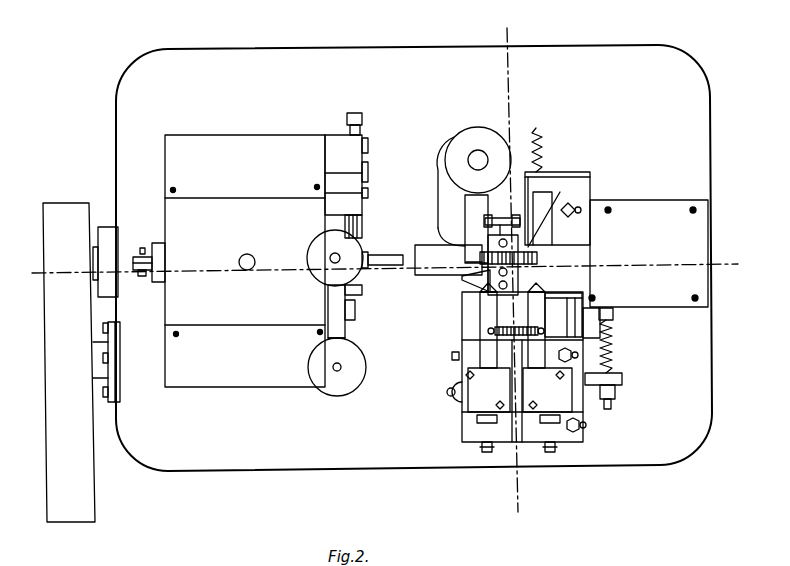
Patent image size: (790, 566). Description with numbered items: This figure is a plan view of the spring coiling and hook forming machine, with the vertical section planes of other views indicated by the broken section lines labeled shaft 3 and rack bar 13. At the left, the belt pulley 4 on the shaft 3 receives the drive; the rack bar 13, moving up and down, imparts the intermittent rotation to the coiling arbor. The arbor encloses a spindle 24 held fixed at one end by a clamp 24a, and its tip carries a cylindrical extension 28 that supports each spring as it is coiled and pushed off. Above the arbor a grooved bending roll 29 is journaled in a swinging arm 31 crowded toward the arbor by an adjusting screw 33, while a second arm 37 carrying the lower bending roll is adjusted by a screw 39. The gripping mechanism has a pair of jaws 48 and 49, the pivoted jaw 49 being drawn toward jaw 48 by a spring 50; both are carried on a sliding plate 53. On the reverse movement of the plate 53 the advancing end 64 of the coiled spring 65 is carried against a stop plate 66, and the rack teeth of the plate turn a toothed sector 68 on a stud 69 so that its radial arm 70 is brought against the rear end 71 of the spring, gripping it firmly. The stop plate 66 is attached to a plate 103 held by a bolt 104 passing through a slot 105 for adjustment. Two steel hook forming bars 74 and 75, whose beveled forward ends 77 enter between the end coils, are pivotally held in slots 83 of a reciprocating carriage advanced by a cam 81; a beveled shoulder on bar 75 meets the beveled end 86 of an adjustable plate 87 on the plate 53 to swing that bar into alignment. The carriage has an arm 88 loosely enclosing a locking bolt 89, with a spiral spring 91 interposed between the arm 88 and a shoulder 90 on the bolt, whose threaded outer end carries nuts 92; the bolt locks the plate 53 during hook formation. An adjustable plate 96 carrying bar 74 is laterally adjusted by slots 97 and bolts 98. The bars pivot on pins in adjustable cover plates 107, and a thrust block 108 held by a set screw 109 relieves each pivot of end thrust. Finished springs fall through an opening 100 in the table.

The shaft 3 is at (87, 384).
The belt pulley 4 is at (62, 346).
The rack bar 13 is at (511, 271).
The spindle 24 is at (165, 263).
The clamp 24a is at (141, 250).
The cylindrical extension 28 is at (387, 259).
The grooved bending roll 29 is at (360, 226).
The swinging arm 31 is at (330, 302).
The adjusting screw 33 is at (333, 256).
The swinging arm 37 is at (345, 342).
The adjusting screw 39 is at (330, 368).
The gripping jaw 48 is at (520, 276).
The pivoted gripping jaw 49 is at (497, 234).
The spring 50 is at (551, 213).
The sliding plate 53 is at (480, 272).
The advancing end of the coiled spring 64 is at (540, 260).
The coiled spring 65 is at (488, 266).
The stop plate 66 is at (540, 240).
The toothed sector 68 is at (506, 146).
The stud 69 is at (475, 150).
The radial arm 70 is at (466, 204).
The rear end of the coiled spring 71 is at (462, 262).
The hook forming bar 74 is at (563, 315).
The hook forming bar 75 is at (485, 318).
The beveled forward ends 77 is at (484, 298).
The cam 81 is at (532, 326).
The slots 83 is at (452, 356).
The beveled end 86 is at (510, 326).
The beveled plate 87 is at (555, 291).
The arm 88 is at (620, 381).
The locking bolt 89 is at (614, 356).
The shoulder 90 is at (614, 318).
The spiral spring 91 is at (614, 340).
The nuts 92 is at (612, 402).
The adjustable plate 96 is at (590, 430).
The slots 97 is at (578, 358).
The bolts 98 is at (596, 448).
The opening in the table 100 is at (430, 247).
The plate 103 is at (594, 228).
The bolt 104 is at (572, 205).
The slot 105 is at (582, 208).
The cover plates 107 is at (472, 402).
The thrust block 108 is at (480, 420).
The set screw 109 is at (487, 455).